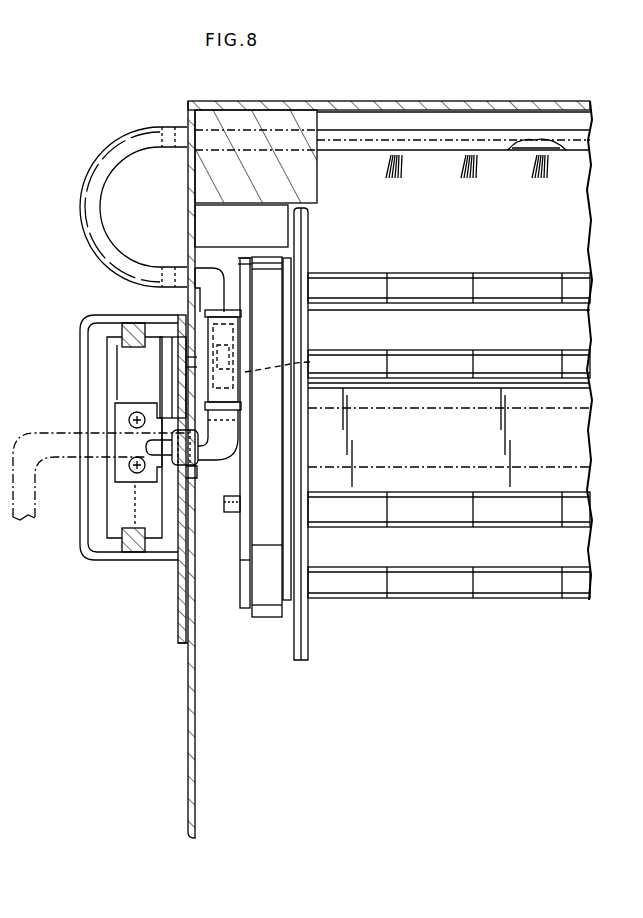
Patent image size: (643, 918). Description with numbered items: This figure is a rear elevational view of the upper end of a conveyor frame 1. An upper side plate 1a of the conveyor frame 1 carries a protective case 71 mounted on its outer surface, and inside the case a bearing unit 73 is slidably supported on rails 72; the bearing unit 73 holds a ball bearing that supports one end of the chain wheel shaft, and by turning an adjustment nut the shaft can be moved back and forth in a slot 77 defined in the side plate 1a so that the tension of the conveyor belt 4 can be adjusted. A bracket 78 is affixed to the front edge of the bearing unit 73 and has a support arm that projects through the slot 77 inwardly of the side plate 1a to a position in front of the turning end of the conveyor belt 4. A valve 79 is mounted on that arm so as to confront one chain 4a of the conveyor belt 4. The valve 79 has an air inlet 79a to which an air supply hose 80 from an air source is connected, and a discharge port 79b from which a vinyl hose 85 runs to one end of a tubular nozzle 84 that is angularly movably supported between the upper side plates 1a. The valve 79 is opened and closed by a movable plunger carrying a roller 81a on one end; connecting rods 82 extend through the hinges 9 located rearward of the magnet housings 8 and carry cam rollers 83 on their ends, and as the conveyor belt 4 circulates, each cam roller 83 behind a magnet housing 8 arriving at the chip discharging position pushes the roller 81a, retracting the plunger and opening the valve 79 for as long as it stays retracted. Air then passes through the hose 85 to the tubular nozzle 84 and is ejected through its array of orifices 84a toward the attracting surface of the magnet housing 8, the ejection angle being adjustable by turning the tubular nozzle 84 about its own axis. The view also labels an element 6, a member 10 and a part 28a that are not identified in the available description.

The conveyor frame 1 is at (406, 101).
The upper side plate 1a is at (190, 186).
The conveyor belt 4 is at (431, 275).
The chain 4a is at (237, 536).
The joint 6 is at (466, 307).
The magnet housing 8 is at (437, 393).
The hinge 9 is at (408, 350).
The mounting plate 10 is at (172, 404).
The opening 28a is at (197, 362).
The protective case 71 is at (82, 362).
The rail 72 is at (117, 330).
The bearing unit 73 is at (108, 500).
The slot 77 is at (192, 474).
The bracket 78 is at (131, 405).
The valve 79 is at (244, 341).
The air inlet 79a is at (86, 458).
The discharge port 79b is at (212, 264).
The air supply hose 80 is at (68, 432).
The roller 81a is at (295, 368).
The connecting rod 82 is at (224, 506).
The cam roller 83 is at (250, 318).
The tubular nozzle 84 is at (345, 150).
The orifice 84a is at (540, 152).
The hose 85 is at (85, 178).